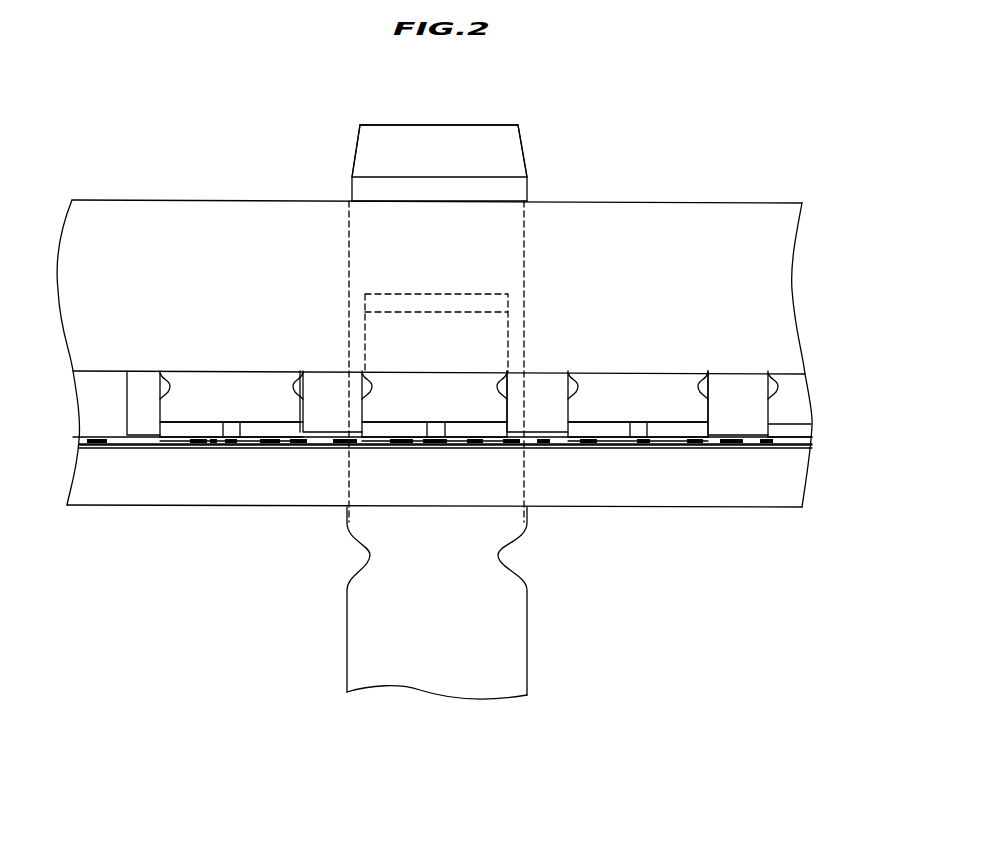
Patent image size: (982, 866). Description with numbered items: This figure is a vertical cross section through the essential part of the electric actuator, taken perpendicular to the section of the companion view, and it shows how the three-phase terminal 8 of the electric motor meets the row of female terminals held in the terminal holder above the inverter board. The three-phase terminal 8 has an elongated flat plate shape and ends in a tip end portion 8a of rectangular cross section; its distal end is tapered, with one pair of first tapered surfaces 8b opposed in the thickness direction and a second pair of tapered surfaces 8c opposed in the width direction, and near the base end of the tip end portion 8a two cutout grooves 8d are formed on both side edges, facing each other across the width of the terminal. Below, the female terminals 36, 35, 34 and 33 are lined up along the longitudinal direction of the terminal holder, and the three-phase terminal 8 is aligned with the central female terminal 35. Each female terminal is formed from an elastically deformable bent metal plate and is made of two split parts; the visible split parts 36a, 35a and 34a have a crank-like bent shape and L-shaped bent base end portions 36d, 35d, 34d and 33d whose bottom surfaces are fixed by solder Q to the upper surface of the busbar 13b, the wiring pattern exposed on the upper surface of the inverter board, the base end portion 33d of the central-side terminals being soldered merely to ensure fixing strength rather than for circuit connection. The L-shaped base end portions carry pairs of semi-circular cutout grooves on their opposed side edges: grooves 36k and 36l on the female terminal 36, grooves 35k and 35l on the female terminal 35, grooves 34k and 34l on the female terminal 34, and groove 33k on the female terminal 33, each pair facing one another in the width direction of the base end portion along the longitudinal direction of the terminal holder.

The three-phase terminal 8 is at (450, 395).
The tip end portion 8a is at (352, 188).
The first tapered surfaces 8b is at (514, 146).
The second tapered surfaces 8c is at (353, 152).
The cutout grooves 8d is at (369, 553).
The busbar 13b is at (208, 446).
The female terminal 33 is at (765, 414).
The semi-circular cutout groove 33k is at (755, 375).
The base end portion 33d is at (787, 436).
The female terminal 34 is at (633, 426).
The semi-circular cutout groove 34k is at (562, 375).
The semi-circular cutout groove 34l is at (716, 375).
The split part 34a is at (675, 433).
The base end portion 34d is at (608, 433).
The female terminal 35 is at (438, 368).
The semi-circular cutout groove 35k is at (360, 385).
The semi-circular cutout groove 35l is at (526, 372).
The split part 35a is at (378, 433).
The base end portion 35d is at (480, 297).
The female terminal 36 is at (215, 426).
The semi-circular cutout groove 36k is at (150, 372).
The semi-circular cutout groove 36l is at (300, 372).
The split part 36a is at (180, 433).
The base end portion 36d is at (258, 433).
The solder Q is at (270, 446).